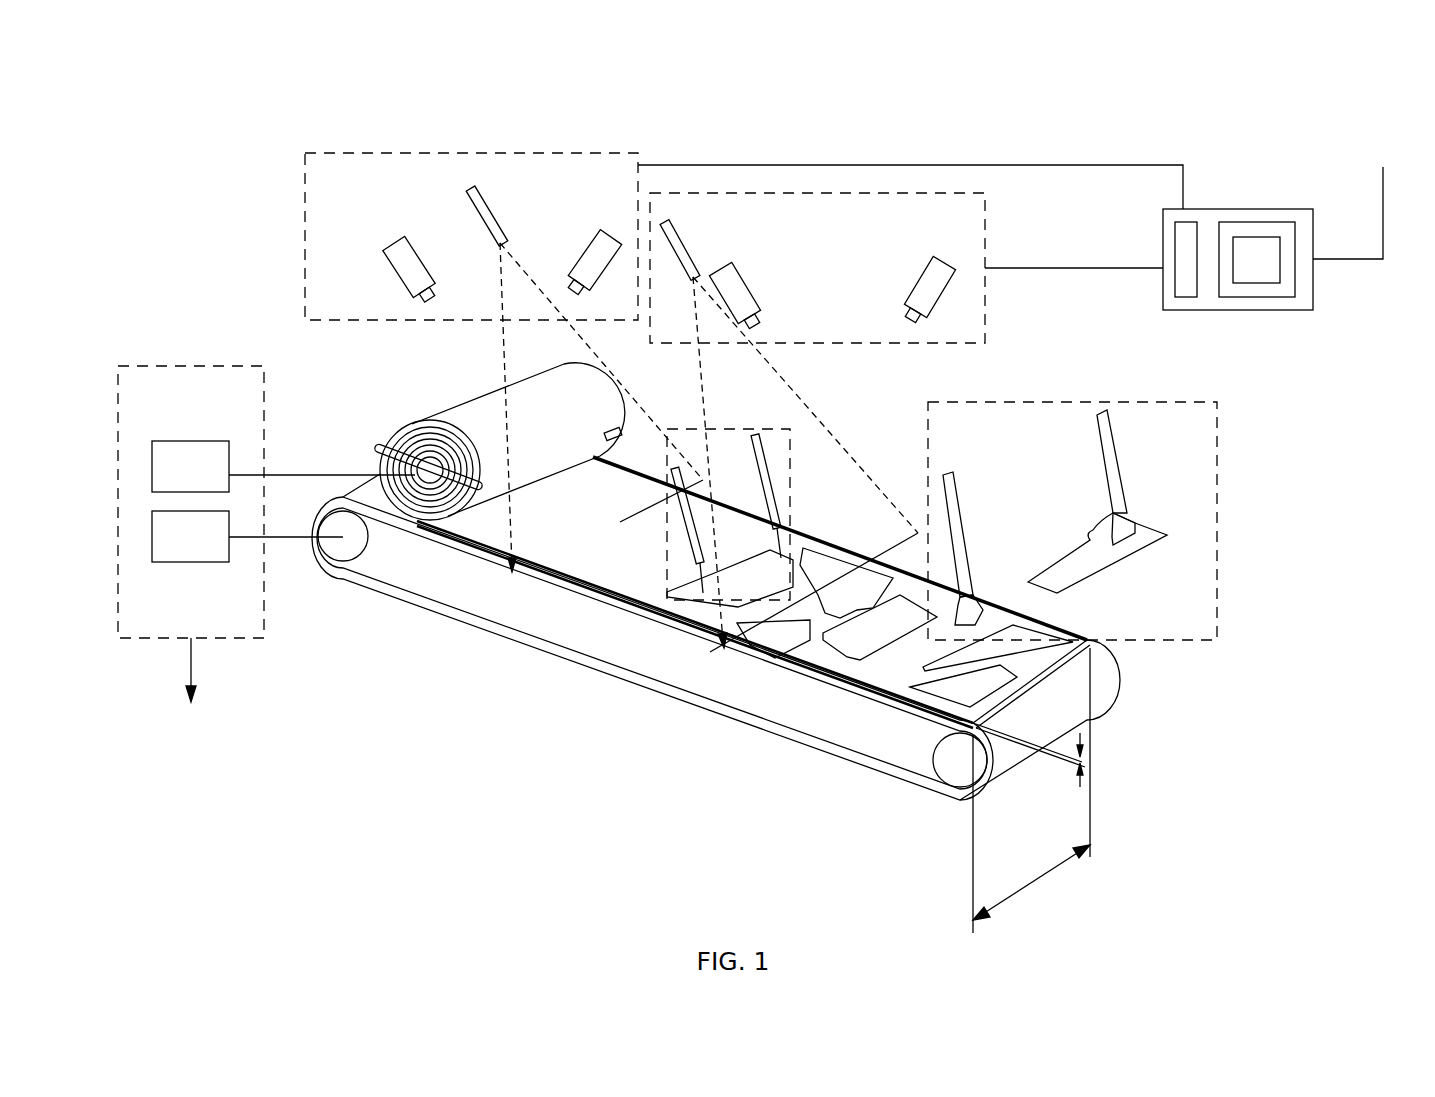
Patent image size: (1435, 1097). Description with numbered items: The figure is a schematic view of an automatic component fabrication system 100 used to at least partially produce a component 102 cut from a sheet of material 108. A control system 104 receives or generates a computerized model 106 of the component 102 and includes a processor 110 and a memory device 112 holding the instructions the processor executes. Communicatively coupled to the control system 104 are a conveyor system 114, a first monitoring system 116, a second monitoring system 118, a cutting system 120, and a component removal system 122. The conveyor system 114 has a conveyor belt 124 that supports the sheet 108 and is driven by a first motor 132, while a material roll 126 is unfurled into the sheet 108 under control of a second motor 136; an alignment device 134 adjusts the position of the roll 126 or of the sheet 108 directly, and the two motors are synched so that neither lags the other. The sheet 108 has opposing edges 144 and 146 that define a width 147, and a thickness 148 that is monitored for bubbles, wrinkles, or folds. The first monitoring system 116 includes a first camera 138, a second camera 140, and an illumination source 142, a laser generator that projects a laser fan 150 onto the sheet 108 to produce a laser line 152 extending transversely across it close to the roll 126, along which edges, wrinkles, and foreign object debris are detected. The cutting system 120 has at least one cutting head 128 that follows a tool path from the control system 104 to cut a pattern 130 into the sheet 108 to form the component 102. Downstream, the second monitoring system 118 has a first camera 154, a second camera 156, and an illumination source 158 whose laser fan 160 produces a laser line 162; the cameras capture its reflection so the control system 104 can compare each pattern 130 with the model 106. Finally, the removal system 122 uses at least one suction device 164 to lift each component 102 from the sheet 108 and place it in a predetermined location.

The automatic component fabrication system 100 is at (182, 119).
The component 102 is at (808, 645).
The control system 104 is at (1163, 295).
The computerized model 106 is at (1262, 283).
The sheet of material 108 is at (485, 520).
The processor 110 is at (1192, 226).
The memory device 112 is at (1248, 222).
The conveyor system 114 is at (226, 365).
The first monitoring system 116 is at (528, 153).
The second monitoring system 118 is at (986, 193).
The cutting system 120 is at (667, 560).
The component removal system 122 is at (1217, 432).
The conveyor belt 124 is at (372, 585).
The material roll 126 is at (568, 366).
The cutting head 128 is at (757, 486).
The pattern 130 is at (888, 705).
The first motor 132 is at (167, 551).
The alignment device 134 is at (378, 448).
The second motor 136 is at (167, 481).
The first camera 138 is at (410, 246).
The second camera 140 is at (589, 245).
The illumination source 142 is at (490, 207).
The edge 144 is at (905, 705).
The edge 146 is at (1063, 628).
The width 147 is at (1040, 882).
The thickness 148 is at (1080, 787).
The laser fan 150 is at (503, 357).
The laser line 152 is at (533, 630).
The first camera 154 is at (740, 277).
The second camera 156 is at (922, 277).
The illumination source 158 is at (682, 233).
The laser fan 160 is at (798, 386).
The laser line 162 is at (893, 547).
The suction device 164 is at (955, 500).